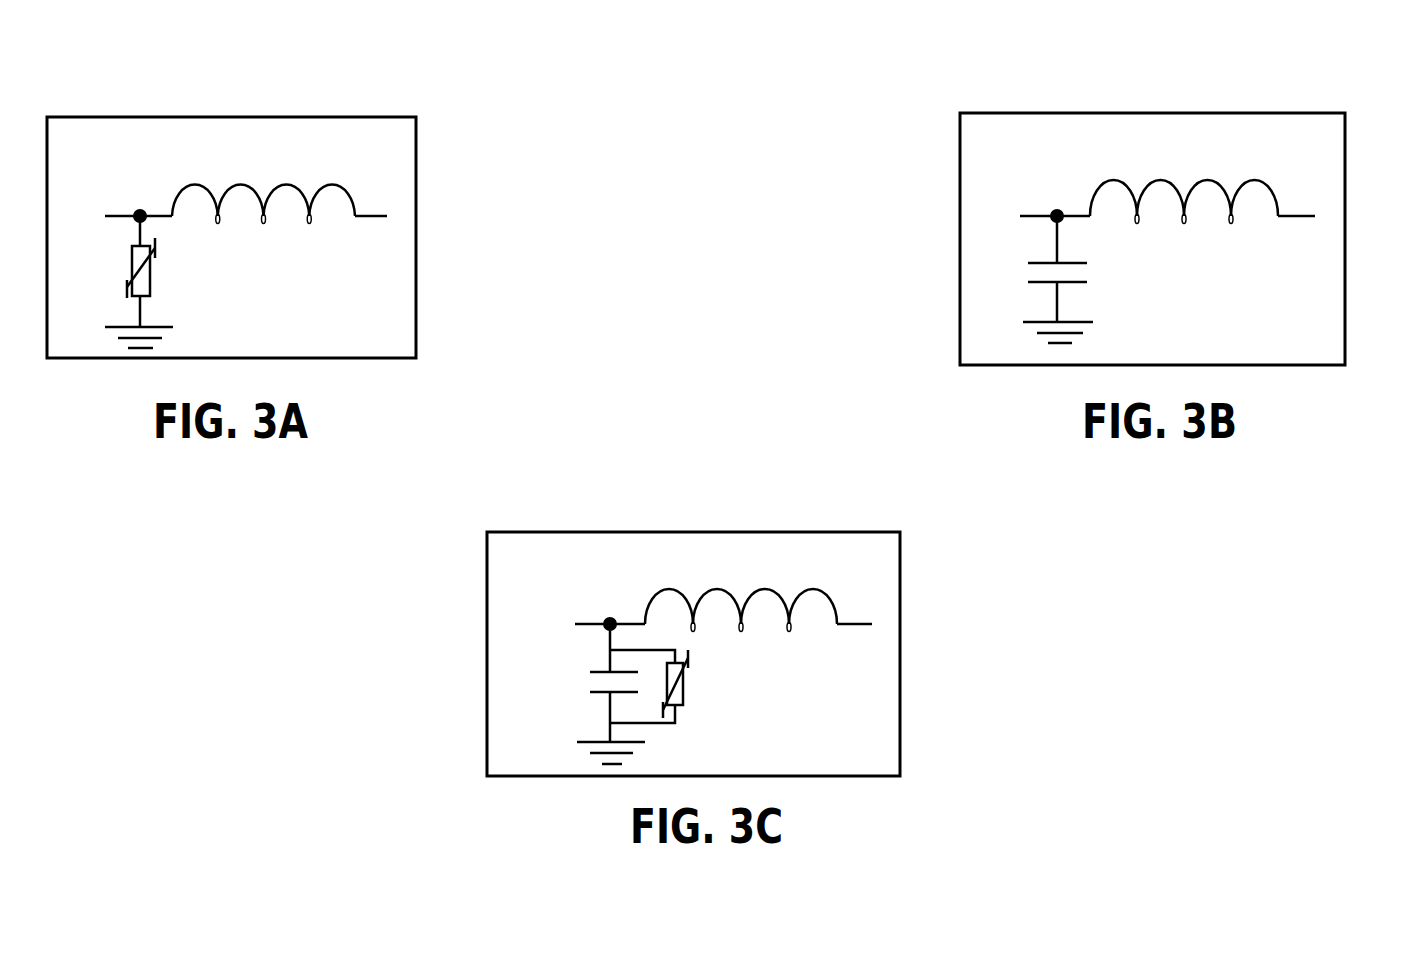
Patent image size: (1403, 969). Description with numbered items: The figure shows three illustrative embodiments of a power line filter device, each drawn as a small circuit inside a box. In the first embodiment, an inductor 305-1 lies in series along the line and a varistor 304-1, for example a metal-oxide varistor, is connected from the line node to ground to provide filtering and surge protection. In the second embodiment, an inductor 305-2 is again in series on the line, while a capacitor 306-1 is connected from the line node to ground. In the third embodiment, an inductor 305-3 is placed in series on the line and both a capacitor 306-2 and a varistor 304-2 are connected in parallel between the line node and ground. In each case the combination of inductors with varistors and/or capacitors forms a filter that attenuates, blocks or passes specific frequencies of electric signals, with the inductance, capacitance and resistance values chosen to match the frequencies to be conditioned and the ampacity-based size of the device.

In FIG. 3A, the inductor 305-1 is at (263, 179).
In FIG. 3B, the inductor 305-2 is at (1184, 177).
In FIG. 3C, the inductor 305-3 is at (741, 587).
In FIG. 3A, the varistor 304-1 is at (184, 271).
In FIG. 3C, the varistor 304-2 is at (694, 686).
In FIG. 3B, the capacitor 306-1 is at (1102, 269).
In FIG. 3C, the capacitor 306-2 is at (571, 683).